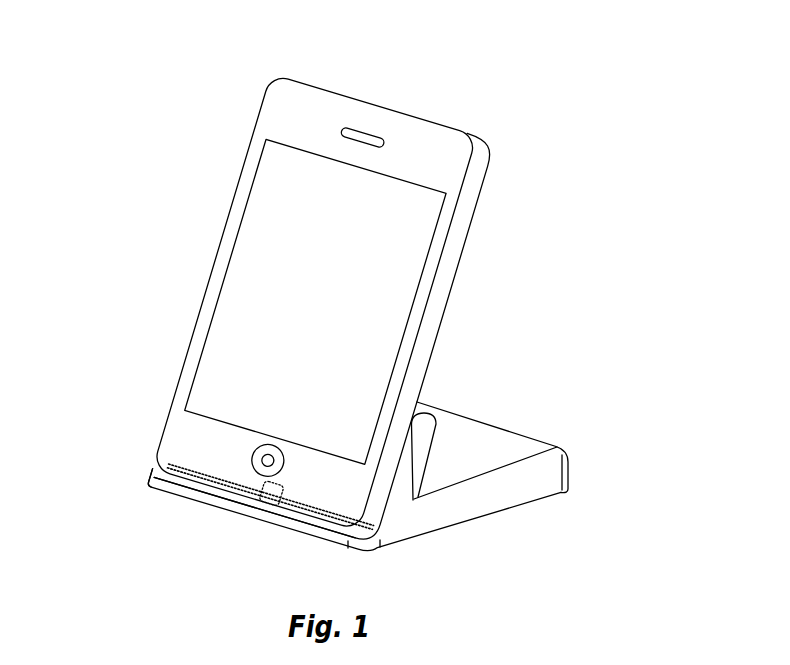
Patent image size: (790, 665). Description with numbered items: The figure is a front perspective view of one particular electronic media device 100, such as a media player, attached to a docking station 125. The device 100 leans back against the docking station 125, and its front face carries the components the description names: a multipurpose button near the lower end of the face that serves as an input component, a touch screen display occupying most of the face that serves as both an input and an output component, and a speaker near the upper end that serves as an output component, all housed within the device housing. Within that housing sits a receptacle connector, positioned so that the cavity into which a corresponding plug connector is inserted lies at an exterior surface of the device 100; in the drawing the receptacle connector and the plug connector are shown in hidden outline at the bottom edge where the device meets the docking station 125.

The electronic media device 100 is at (311, 313).
The docking station 125 is at (594, 471).